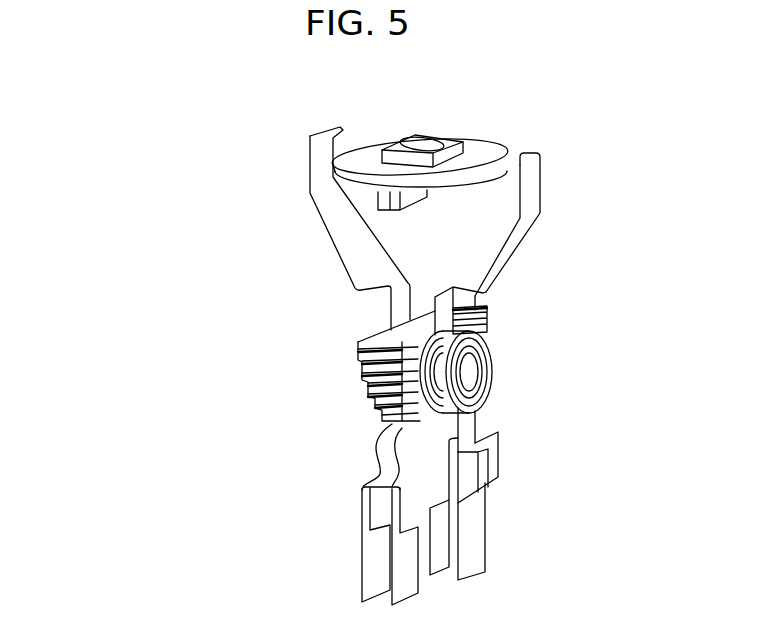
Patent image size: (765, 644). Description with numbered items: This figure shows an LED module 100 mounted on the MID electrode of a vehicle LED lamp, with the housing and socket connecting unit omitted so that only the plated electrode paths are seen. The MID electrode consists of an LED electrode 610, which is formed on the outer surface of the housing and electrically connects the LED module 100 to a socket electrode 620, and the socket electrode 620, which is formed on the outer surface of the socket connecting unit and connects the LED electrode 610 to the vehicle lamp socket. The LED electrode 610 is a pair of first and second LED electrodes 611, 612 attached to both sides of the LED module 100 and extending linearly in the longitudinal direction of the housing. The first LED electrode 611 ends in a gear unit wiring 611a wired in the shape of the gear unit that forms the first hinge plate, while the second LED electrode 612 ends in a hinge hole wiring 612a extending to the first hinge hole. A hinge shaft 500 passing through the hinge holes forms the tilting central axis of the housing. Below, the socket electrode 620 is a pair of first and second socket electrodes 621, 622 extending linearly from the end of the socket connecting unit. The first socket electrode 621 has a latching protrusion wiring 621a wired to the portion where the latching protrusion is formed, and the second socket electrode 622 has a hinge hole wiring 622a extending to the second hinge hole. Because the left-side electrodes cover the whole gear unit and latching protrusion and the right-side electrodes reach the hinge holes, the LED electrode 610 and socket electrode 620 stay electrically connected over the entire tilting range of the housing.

The LED module 100 is at (496, 146).
The hinge shaft 500 is at (469, 370).
The LED electrode 610 is at (370, 274).
The first LED electrode 611 is at (328, 274).
The gear unit wiring 611a is at (375, 378).
The second LED electrode 612 is at (549, 244).
The hinge hole wiring 612a is at (460, 322).
The socket electrode 620 is at (357, 506).
The first socket electrode 621 is at (314, 514).
The latching protrusion wiring 621a is at (393, 428).
The second socket electrode 622 is at (533, 494).
The hinge hole wiring 622a is at (467, 410).